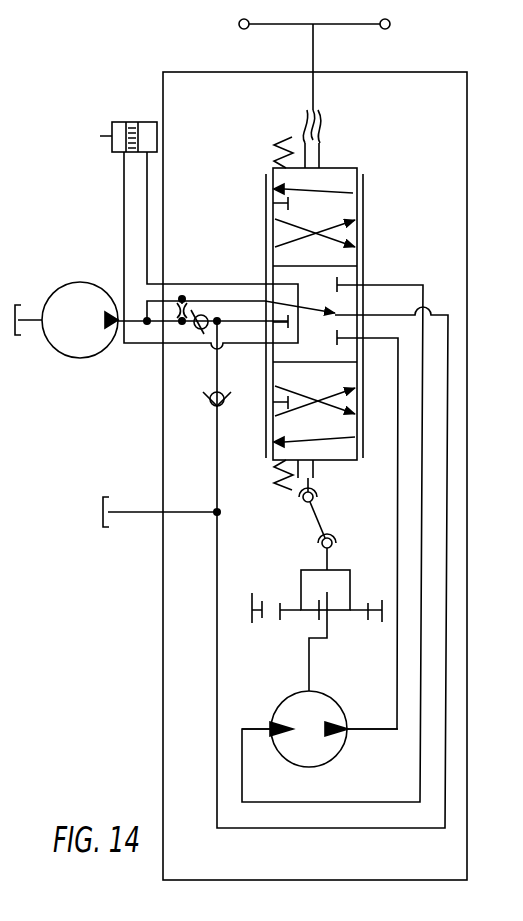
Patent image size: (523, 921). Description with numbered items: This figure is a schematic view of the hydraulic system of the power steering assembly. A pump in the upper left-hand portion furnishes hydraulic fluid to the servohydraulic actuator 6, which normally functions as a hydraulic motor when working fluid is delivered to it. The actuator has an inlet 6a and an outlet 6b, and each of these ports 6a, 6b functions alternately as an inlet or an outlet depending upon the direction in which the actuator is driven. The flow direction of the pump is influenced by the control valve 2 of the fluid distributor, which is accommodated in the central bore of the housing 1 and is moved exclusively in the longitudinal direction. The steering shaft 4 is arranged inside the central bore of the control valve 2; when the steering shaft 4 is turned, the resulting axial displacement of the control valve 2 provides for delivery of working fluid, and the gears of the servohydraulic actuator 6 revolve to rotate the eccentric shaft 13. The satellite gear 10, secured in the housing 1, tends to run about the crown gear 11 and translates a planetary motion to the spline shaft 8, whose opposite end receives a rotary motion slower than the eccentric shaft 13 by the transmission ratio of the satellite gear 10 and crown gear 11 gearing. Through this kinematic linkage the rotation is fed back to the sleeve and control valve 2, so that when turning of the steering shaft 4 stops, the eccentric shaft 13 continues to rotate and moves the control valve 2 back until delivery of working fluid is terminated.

The housing 1 is at (365, 210).
The control valve 2 is at (336, 170).
The steering shaft 4 is at (316, 54).
The servohydraulic actuator 6 is at (329, 758).
The inlet 6a is at (270, 724).
The outlet 6b is at (348, 723).
The spline shaft 8 is at (320, 518).
The satellite gear 10 is at (352, 585).
The crown gear 11 is at (252, 616).
The eccentric shaft 13 is at (314, 650).